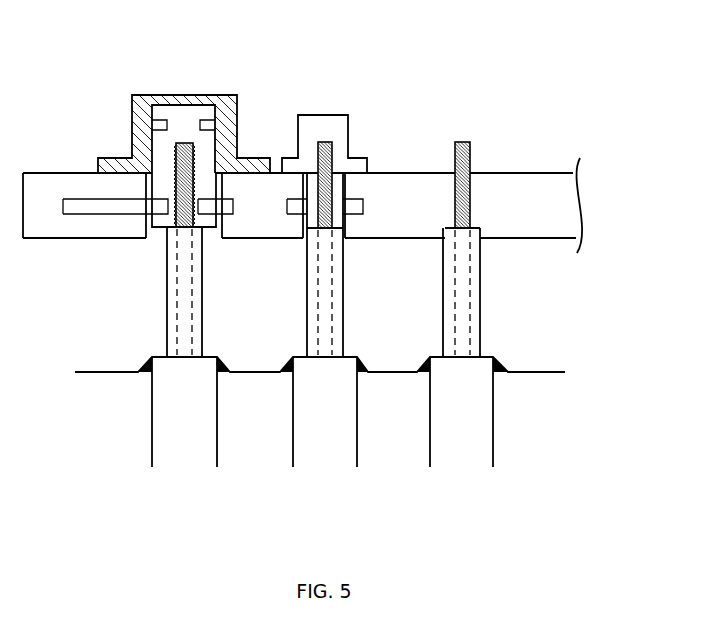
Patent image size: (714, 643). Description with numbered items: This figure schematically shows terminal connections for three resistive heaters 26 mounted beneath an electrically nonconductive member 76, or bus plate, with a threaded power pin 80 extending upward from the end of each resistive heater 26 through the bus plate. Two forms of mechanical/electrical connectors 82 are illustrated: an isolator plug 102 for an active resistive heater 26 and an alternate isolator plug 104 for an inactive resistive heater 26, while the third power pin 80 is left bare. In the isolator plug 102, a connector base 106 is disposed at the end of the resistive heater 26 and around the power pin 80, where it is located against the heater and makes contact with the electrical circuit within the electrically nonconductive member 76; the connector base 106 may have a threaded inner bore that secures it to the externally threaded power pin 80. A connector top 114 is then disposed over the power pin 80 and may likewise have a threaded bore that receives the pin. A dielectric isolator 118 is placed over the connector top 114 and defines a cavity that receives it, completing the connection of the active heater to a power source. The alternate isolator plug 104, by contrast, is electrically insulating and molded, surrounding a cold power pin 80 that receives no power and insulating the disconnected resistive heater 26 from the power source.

The resistive heater 26 is at (187, 453).
The electrically nonconductive member 76 is at (552, 187).
The power pin 80 is at (176, 157).
The mechanical/electrical connector 82 is at (239, 93).
The isolator plug 102 is at (161, 93).
The alternate isolator plug 104 is at (335, 98).
The connector base 106 is at (162, 228).
The connector top 114 is at (187, 114).
The dielectric isolator 118 is at (223, 95).